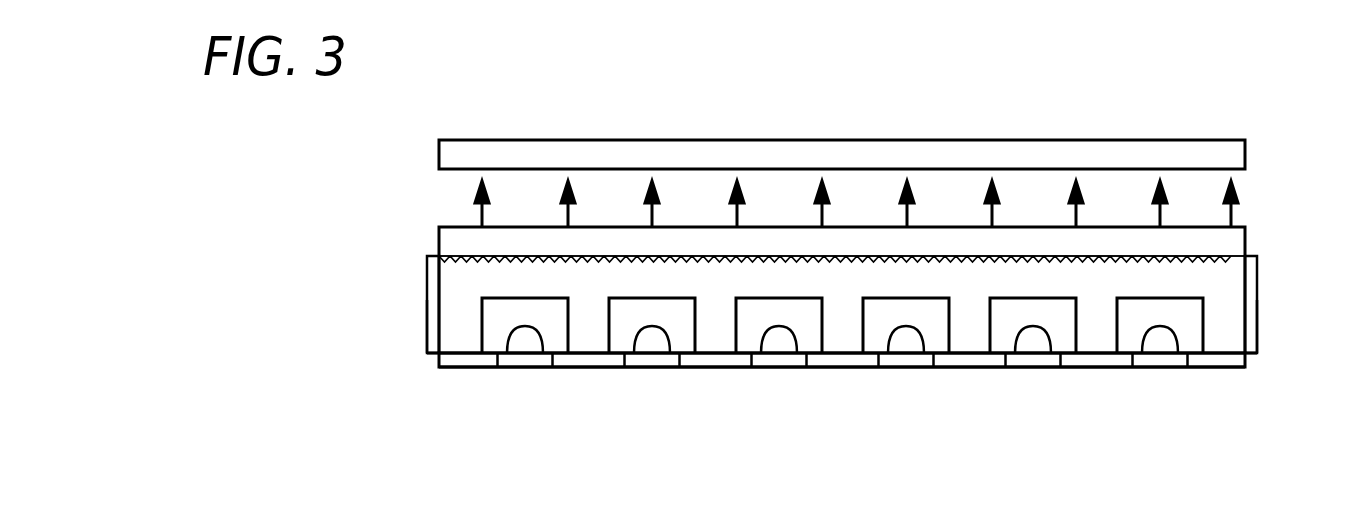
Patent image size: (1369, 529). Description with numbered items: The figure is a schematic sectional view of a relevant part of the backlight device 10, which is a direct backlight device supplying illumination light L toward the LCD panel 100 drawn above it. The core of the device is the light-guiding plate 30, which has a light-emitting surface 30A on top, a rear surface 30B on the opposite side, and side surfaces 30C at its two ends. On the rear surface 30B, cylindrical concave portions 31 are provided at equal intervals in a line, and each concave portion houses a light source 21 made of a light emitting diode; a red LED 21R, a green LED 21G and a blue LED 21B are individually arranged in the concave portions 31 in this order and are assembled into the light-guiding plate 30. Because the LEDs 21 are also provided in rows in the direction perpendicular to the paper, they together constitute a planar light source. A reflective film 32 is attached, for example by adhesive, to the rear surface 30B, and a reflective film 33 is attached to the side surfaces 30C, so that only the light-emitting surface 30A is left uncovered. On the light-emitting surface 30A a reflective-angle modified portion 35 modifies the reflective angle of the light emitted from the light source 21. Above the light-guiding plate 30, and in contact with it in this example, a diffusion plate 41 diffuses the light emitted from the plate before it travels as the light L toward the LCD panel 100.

The backlight device 10 is at (855, 500).
The LCD panel 100 is at (1168, 155).
The light L is at (818, 212).
The diffusion plate 41 is at (1237, 239).
The light-emitting surface 30A is at (945, 257).
The light-guiding plate 30 is at (1225, 333).
The rear surface 30B is at (968, 357).
The side surfaces 30C is at (439, 329).
The reflective film 33 is at (430, 283).
The reflective film 32 is at (463, 360).
The cylindrical concave portions 31 is at (865, 322).
The light source 21 is at (805, 432).
The red LED 21R is at (523, 340).
The green LED 21G is at (650, 340).
The blue LED 21B is at (777, 340).
The reflective-angle modified portion 35 is at (1093, 255).